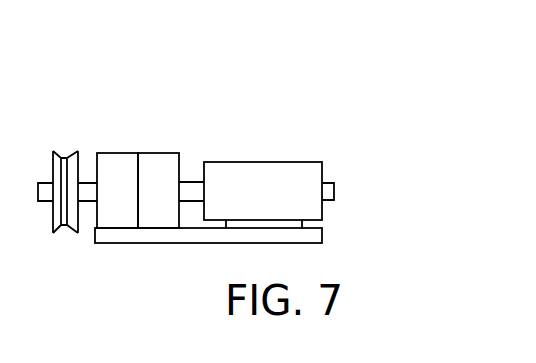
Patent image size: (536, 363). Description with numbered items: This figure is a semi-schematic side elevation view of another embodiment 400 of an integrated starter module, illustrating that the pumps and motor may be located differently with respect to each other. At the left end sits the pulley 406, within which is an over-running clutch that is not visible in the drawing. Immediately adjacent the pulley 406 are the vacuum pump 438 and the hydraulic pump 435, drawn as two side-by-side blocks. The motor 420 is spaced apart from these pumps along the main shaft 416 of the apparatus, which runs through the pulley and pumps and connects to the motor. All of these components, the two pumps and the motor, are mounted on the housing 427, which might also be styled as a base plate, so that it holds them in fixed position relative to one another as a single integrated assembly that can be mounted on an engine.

The embodiment of ISM 400 is at (315, 67).
The pulley 406 is at (60, 150).
The vacuum pump 438 is at (115, 152).
The hydraulic pump 435 is at (170, 152).
The main shaft 416 is at (196, 180).
The motor 420 is at (266, 160).
The housing 427 is at (165, 245).